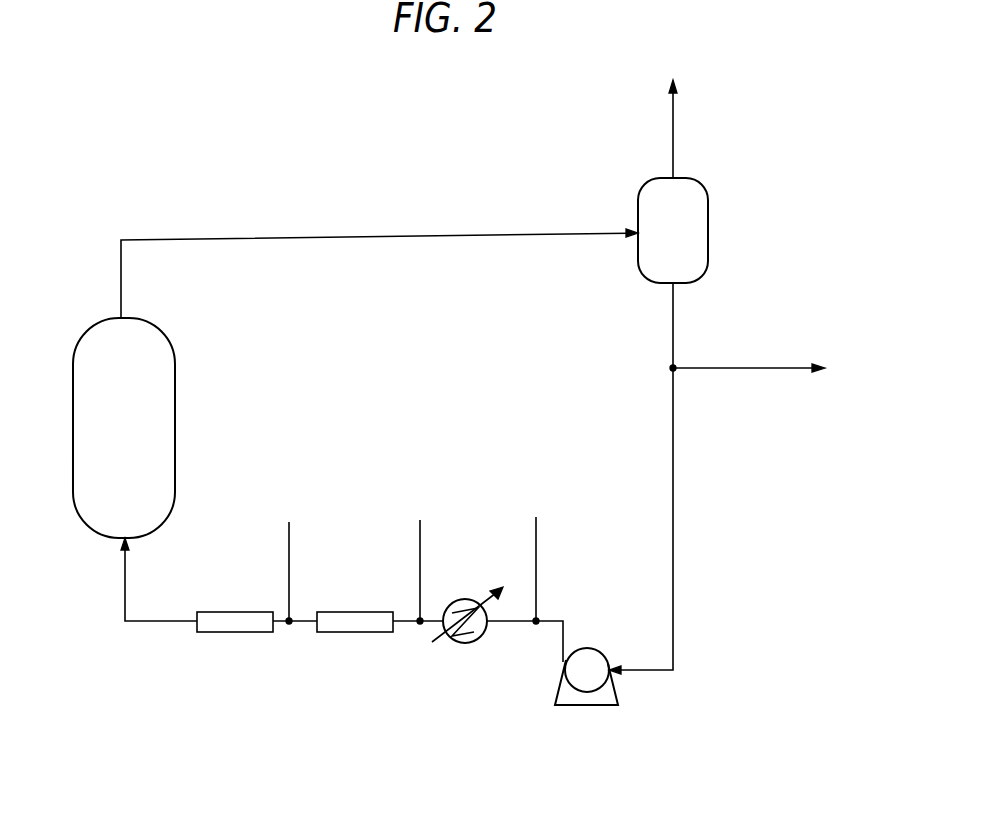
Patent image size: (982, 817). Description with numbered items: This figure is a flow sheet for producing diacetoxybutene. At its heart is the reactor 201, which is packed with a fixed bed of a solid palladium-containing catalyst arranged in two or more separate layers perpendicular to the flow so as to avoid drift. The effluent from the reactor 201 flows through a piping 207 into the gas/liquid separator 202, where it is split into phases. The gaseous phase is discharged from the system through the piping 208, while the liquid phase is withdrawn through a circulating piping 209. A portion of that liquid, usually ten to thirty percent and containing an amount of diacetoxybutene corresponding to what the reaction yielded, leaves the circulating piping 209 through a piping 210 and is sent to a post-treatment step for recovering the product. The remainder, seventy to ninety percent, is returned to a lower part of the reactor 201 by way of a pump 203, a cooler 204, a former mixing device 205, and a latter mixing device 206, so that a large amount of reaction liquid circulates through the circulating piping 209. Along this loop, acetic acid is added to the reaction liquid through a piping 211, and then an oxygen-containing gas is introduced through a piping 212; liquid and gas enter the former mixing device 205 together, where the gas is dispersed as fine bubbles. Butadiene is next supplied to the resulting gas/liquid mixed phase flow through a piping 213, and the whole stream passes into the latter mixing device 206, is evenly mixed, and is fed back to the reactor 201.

The reactor 201 is at (176, 430).
The gas/liquid separator 202 is at (709, 215).
The pump 203 is at (578, 707).
The cooler 204 is at (468, 646).
The former mixing device 205 is at (352, 636).
The latter mixing device 206 is at (222, 637).
The piping 207 is at (468, 233).
The piping 208 is at (675, 102).
The circulating piping 209 is at (675, 423).
The piping 210 is at (765, 368).
The piping 211 is at (538, 553).
The piping 212 is at (422, 556).
The piping 213 is at (291, 555).